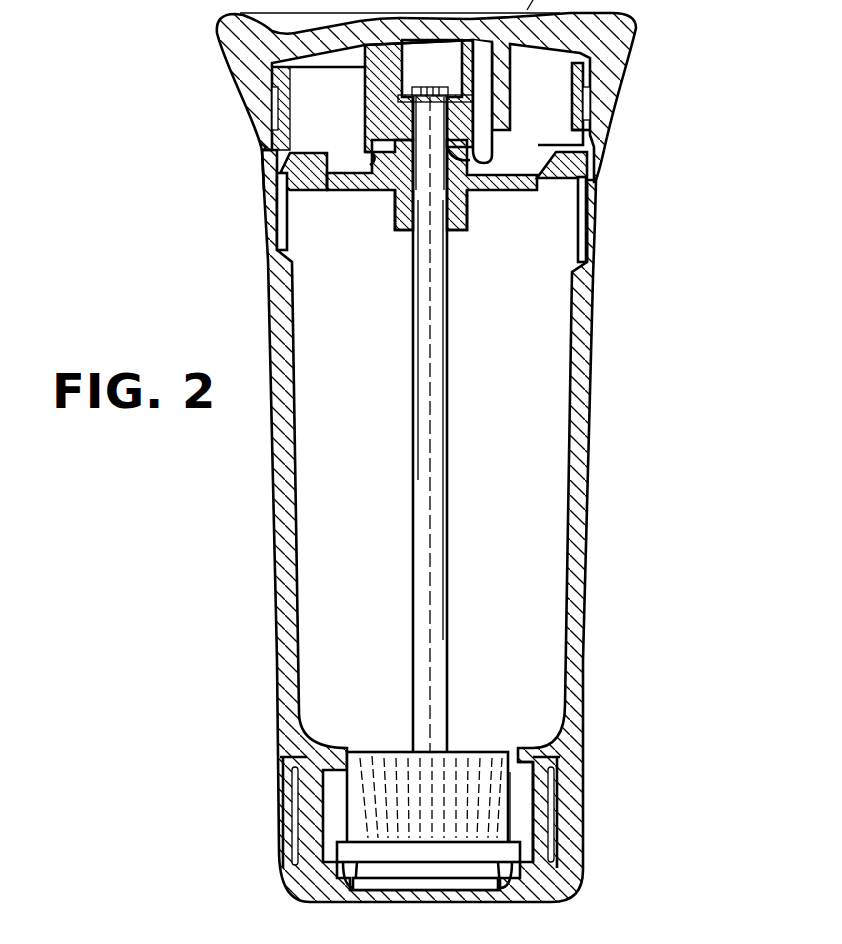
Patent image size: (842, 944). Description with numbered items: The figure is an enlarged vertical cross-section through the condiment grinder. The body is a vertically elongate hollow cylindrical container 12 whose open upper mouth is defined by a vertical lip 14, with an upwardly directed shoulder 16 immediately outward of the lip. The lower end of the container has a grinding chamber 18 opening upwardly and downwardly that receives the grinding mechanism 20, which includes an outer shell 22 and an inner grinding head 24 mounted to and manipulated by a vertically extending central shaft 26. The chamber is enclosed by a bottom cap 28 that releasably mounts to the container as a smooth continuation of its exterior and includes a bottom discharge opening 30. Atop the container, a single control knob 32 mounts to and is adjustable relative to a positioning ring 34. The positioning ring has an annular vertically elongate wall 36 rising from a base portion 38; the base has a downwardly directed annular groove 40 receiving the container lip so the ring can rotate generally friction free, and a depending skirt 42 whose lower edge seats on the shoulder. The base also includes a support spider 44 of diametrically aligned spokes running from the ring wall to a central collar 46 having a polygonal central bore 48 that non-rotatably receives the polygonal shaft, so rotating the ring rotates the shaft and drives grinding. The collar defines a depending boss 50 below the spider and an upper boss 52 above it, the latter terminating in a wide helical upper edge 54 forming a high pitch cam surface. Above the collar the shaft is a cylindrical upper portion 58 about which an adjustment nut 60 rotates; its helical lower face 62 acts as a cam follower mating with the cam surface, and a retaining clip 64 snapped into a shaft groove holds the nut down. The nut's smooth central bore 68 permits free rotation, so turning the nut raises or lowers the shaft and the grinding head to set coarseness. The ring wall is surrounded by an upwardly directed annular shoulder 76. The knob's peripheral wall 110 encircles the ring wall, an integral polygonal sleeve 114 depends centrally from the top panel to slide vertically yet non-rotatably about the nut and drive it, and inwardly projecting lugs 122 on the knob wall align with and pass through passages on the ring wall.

The container 12 is at (602, 361).
The lip 14 is at (576, 204).
The shoulder 16 is at (594, 214).
The grinding chamber 18 is at (558, 788).
The grinding mechanism 20 is at (524, 810).
The outer shell 22 is at (506, 770).
The inner grinding head 24 is at (456, 764).
The central shaft 26 is at (440, 494).
The bottom cap 28 is at (570, 862).
The bottom discharge opening 30 is at (487, 890).
The control knob 32 is at (640, 27).
The positioning ring 34 is at (260, 184).
The annular wall 36 is at (292, 88).
The base portion 38 is at (291, 160).
The annular groove 40 is at (287, 198).
The depending skirt 42 is at (590, 184).
The support spider 44 is at (358, 192).
The central collar 46 is at (394, 212).
The central bore 48 is at (468, 206).
The depending boss 50 is at (469, 206).
The upper boss 52 is at (366, 153).
The helical upper edge 54 is at (462, 156).
The cylindrical upper portion 58 is at (494, 116).
The adjustment nut 60 is at (366, 114).
The helical lower face 62 is at (478, 166).
The retaining clip 64 is at (466, 83).
The central bore 68 is at (423, 87).
The annular shoulder 76 is at (262, 147).
The peripheral wall 110 is at (606, 92).
The sleeve 114 is at (590, 110).
The lugs 122 is at (588, 133).